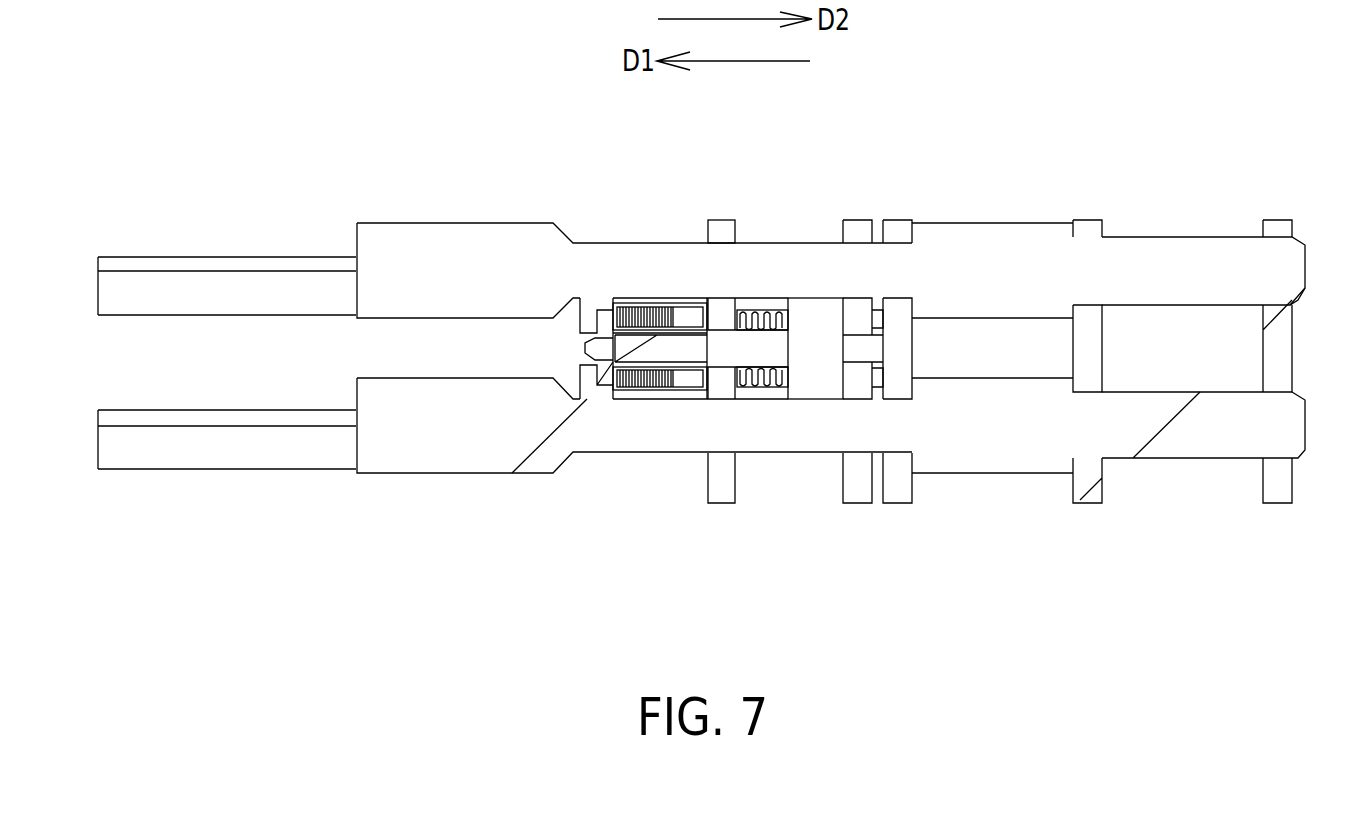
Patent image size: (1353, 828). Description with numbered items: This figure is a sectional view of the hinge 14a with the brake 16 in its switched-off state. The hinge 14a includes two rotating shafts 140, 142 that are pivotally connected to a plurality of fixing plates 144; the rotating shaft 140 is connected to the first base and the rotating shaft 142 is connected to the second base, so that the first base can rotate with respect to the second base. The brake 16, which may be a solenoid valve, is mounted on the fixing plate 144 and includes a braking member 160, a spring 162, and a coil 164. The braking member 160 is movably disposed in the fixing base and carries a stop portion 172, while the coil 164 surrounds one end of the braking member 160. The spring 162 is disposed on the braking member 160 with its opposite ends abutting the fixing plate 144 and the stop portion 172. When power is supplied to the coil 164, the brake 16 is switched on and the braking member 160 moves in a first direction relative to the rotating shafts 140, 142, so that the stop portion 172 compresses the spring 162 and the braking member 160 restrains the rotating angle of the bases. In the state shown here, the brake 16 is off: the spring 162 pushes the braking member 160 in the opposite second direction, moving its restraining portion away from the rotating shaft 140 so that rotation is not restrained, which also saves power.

The hinge 14a is at (831, 307).
The brake 16 is at (662, 357).
The rotating shaft 140 is at (634, 224).
The rotating shaft 142 is at (586, 453).
The fixing plate 144 is at (720, 220).
The braking member 160 is at (692, 345).
The spring 162 is at (773, 380).
The coil 164 is at (648, 315).
The stop portion 172 is at (818, 322).